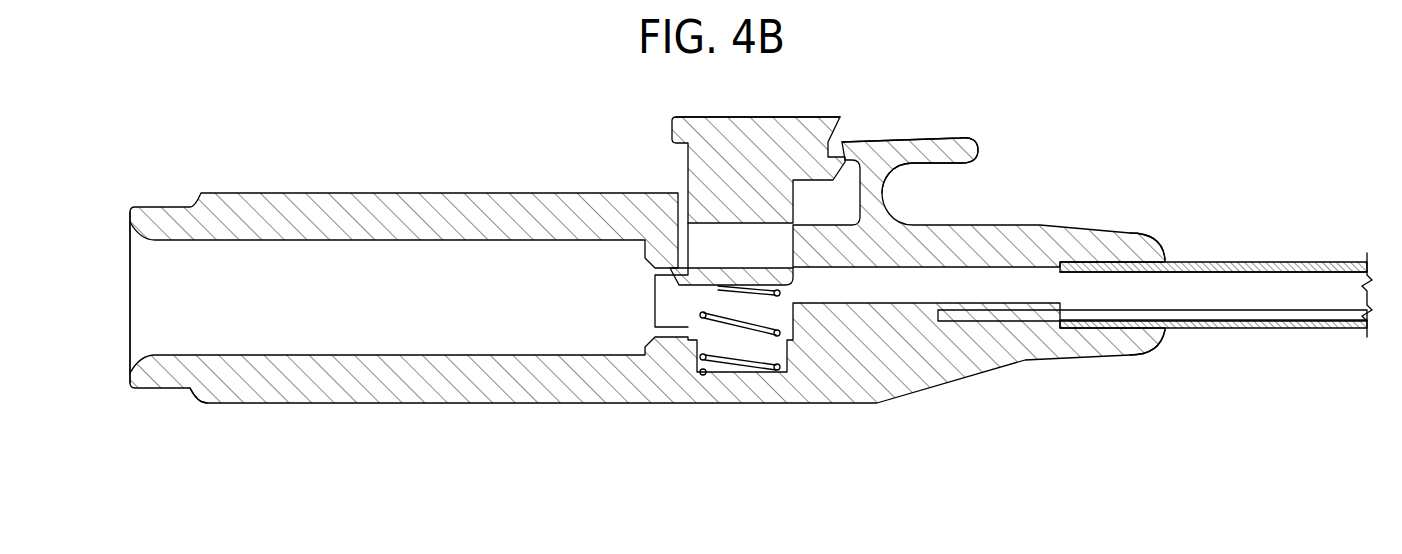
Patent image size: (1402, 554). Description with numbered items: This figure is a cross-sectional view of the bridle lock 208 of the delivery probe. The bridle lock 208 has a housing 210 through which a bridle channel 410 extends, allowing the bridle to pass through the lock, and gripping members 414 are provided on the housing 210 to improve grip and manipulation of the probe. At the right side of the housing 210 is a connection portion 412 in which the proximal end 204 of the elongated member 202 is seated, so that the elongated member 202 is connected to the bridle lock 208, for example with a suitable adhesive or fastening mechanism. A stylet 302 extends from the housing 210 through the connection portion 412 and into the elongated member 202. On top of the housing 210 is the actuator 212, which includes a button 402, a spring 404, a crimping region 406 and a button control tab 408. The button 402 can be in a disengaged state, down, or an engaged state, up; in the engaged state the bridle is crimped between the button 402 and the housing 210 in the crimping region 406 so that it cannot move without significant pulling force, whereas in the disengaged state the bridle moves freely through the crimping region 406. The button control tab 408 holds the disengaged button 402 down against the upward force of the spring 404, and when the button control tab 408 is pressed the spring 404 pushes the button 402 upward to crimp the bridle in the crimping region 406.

The bridle lock 208 is at (447, 140).
The housing 210 is at (898, 370).
The actuator 212 is at (803, 100).
The button 402 is at (717, 133).
The spring 404 is at (730, 365).
The crimping region 406 is at (783, 265).
The button control tab 408 is at (918, 148).
The bridle channel 410 is at (112, 322).
The connection portion 412 is at (1172, 252).
The gripping members 414 is at (205, 403).
The proximal end 204 is at (1275, 245).
The elongated member 202 is at (1313, 290).
The stylet 302 is at (1225, 313).